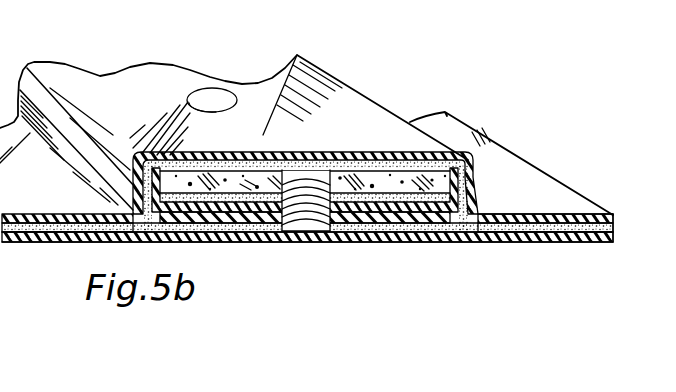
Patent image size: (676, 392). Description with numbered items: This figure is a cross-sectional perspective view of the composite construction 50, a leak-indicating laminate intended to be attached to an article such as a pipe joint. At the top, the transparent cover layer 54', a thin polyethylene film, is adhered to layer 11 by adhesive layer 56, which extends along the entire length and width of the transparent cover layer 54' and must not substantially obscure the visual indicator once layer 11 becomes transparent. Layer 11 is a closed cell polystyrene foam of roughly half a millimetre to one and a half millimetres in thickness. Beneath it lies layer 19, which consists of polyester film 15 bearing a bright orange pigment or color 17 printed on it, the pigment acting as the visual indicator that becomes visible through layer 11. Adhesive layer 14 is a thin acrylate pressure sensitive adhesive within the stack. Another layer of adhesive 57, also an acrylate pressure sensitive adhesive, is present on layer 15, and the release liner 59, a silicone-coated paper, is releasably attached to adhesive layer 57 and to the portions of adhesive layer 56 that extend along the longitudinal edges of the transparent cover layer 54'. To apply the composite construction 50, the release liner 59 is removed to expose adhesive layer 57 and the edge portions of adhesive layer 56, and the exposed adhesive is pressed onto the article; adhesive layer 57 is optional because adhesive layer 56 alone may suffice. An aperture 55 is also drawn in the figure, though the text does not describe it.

The composite construction 50 is at (112, 67).
The aperture / hole 55 is at (220, 92).
The layer 11 is at (473, 183).
The adhesive layer 14 is at (466, 196).
The polyester film 15 is at (231, 239).
The bright orange pigment or color 17 is at (252, 236).
The layer 19 is at (380, 227).
The transparent cover layer 54' is at (337, 204).
The adhesive layer 56 is at (614, 228).
The adhesive layer 57 is at (432, 226).
The release liner 59 is at (481, 238).